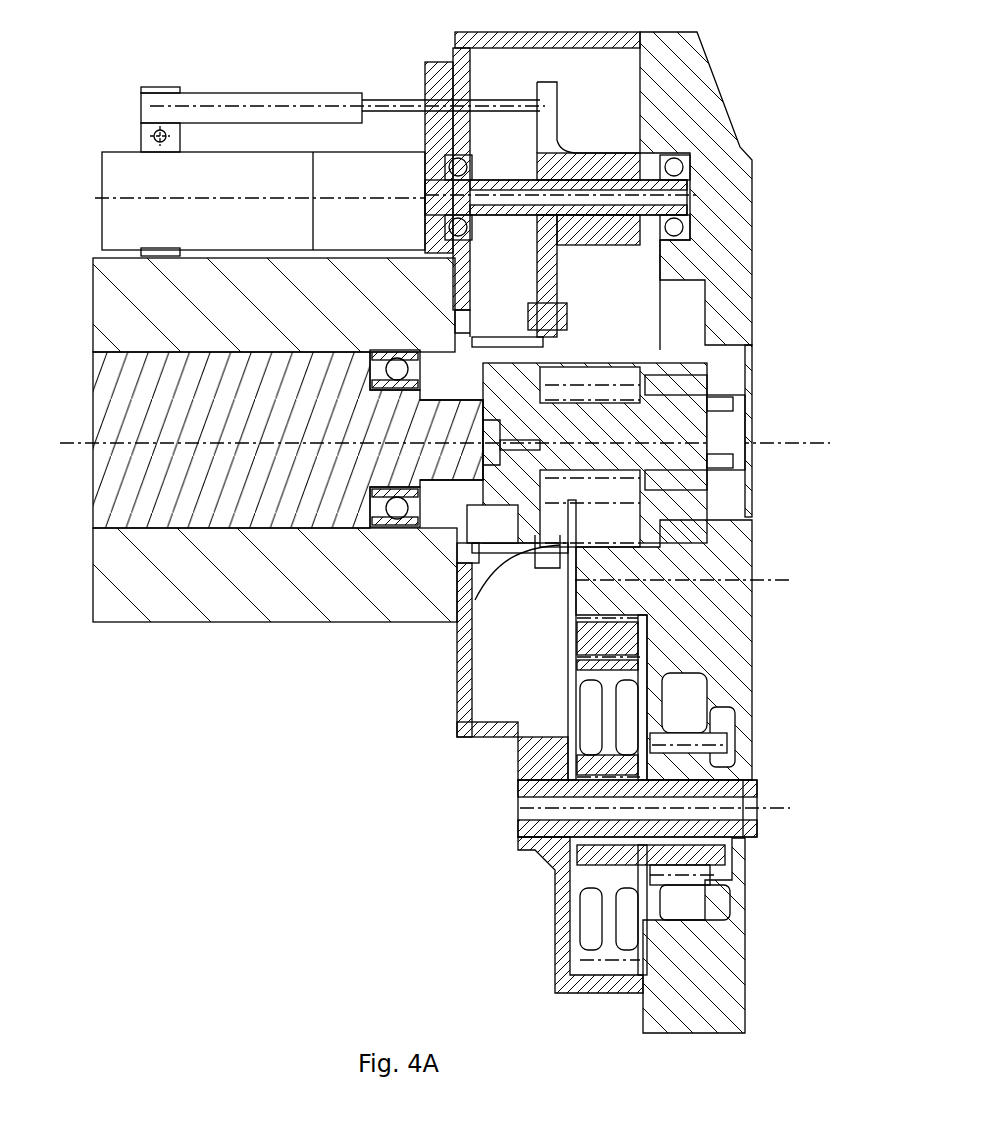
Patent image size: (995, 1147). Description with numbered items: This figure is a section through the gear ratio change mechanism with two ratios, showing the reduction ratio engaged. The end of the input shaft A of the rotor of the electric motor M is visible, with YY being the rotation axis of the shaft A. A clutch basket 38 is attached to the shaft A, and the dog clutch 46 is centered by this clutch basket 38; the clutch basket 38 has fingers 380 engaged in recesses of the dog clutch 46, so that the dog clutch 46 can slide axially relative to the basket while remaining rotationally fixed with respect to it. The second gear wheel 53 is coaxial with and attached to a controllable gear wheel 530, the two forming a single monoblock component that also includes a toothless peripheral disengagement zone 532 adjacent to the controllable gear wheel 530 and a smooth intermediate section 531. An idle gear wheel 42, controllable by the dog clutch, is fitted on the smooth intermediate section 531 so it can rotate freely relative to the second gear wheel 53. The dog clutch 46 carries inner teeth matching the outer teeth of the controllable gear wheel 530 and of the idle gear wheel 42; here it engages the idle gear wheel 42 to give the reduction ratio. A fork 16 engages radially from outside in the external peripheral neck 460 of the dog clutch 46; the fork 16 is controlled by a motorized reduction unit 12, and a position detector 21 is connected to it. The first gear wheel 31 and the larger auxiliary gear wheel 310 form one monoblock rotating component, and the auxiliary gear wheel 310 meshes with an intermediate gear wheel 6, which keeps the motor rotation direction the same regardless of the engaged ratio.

The motorized reduction unit 12 is at (138, 176).
The position detector 21 is at (248, 105).
The fork 16 is at (597, 167).
The dog clutch 46 is at (587, 350).
The idle gear wheel 42 is at (600, 372).
The smooth intermediate section 531 is at (615, 390).
The second gear wheel 53 is at (703, 373).
The controllable gear wheel 530 is at (470, 525).
The fingers 380 is at (500, 510).
The disengagement zone 532 is at (520, 507).
The peripheral neck 460 is at (548, 562).
The clutch basket 38 is at (400, 530).
The intermediate gear wheel 6 is at (600, 634).
The first gear wheel 31 is at (710, 870).
The auxiliary gear wheel 310 is at (603, 952).
The input shaft A is at (405, 470).
The electric motor M is at (193, 600).
The rotation axis Y is at (445, 425).